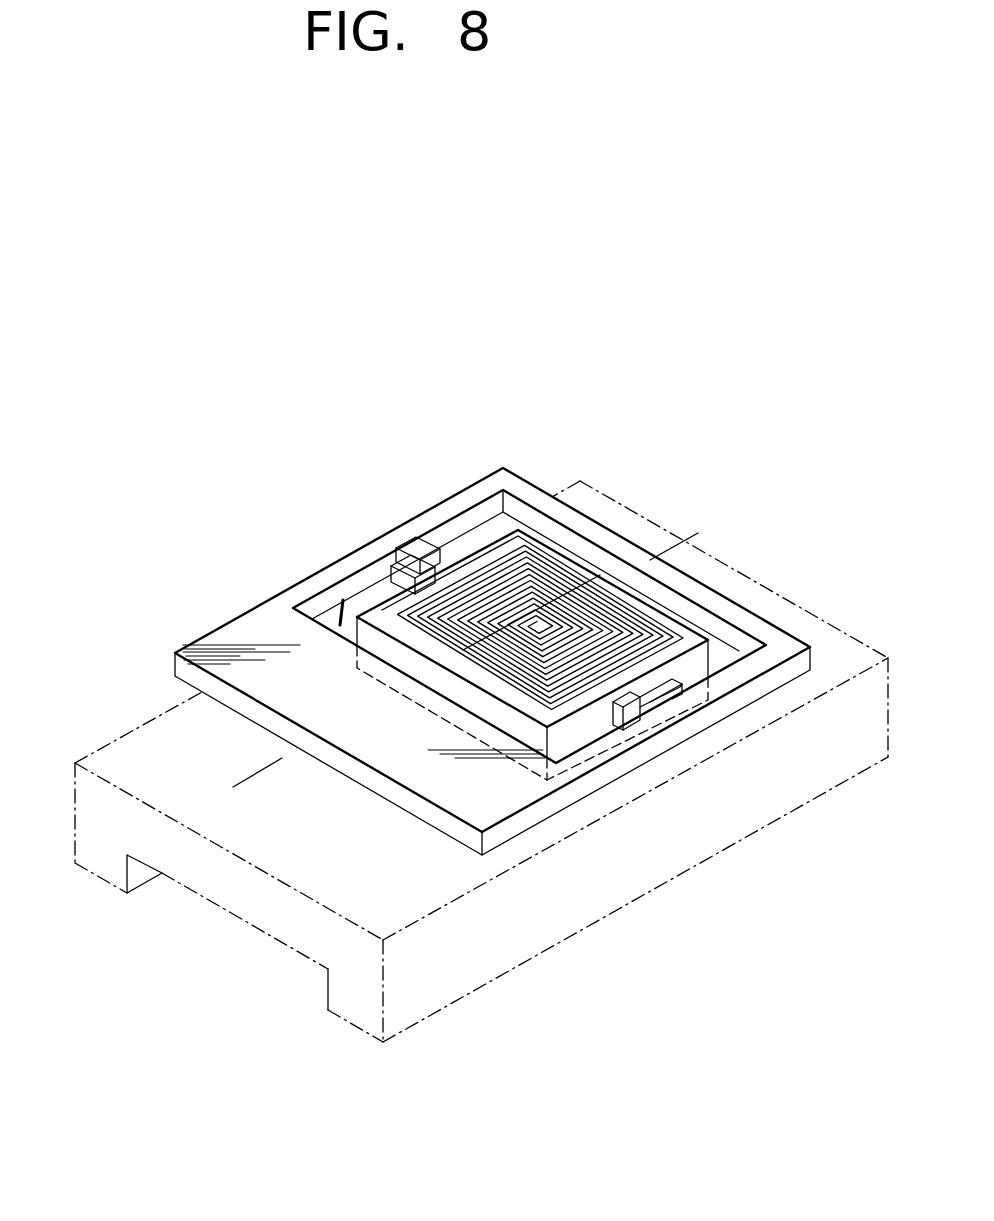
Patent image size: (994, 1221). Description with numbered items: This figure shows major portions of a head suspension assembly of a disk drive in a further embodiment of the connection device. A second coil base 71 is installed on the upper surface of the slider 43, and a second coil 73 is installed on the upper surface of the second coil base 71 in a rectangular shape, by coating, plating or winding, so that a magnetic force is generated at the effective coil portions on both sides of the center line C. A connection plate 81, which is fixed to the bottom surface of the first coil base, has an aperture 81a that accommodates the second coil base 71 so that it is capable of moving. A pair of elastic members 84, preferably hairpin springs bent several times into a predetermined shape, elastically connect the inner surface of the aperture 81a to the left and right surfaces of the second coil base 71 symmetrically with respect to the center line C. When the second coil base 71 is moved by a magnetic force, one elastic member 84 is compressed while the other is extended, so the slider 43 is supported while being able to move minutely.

The slider 43 is at (840, 630).
The connection plate 81 is at (510, 832).
The aperture 81a is at (343, 600).
The second coil base 71 is at (705, 636).
The second coil 73 is at (521, 537).
The elastic members 84 is at (421, 540).
The center line C is at (248, 781).